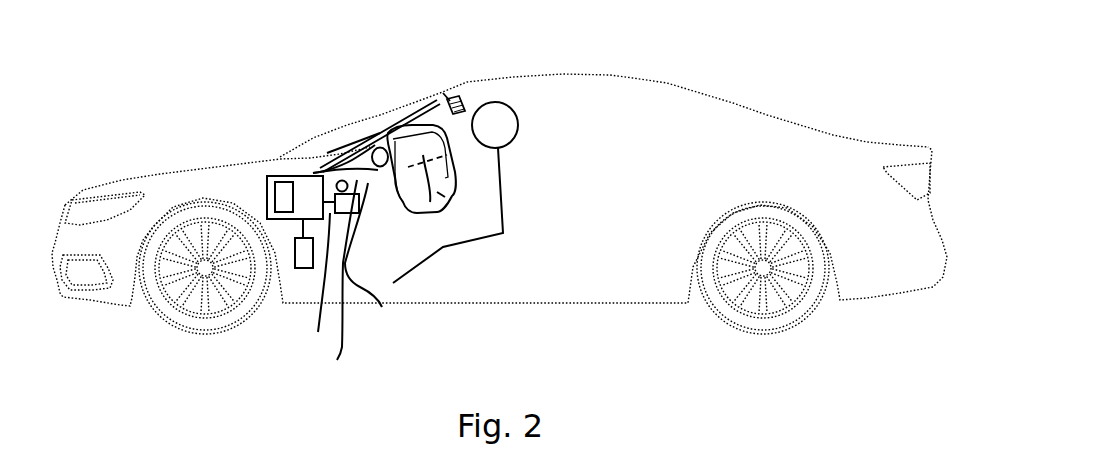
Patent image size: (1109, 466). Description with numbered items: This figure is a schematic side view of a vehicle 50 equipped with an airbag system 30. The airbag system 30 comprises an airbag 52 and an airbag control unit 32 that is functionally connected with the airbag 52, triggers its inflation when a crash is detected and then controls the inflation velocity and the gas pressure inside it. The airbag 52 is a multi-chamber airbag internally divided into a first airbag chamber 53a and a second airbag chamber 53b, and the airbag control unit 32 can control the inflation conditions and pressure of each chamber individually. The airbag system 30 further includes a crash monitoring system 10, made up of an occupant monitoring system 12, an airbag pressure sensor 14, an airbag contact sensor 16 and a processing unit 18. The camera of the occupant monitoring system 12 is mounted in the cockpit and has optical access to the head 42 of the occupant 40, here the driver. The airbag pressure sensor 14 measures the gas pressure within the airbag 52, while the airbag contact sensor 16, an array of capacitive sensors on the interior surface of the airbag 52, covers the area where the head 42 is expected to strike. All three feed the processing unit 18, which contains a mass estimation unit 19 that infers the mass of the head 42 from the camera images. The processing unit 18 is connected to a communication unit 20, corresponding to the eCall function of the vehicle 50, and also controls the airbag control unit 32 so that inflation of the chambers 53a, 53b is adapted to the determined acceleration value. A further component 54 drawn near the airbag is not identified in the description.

The crash monitoring system 10 is at (158, 42).
The occupant monitoring system 12 is at (443, 93).
The airbag pressure sensor 14 is at (312, 282).
The airbag contact sensor 16 is at (457, 170).
The processing unit 18 is at (300, 176).
The mass estimation unit 19 is at (273, 195).
The communication unit 20 is at (293, 270).
The airbag system 30 is at (779, 17).
The airbag control unit 32 is at (348, 279).
The occupant 40 is at (521, 170).
The head 42 is at (520, 127).
The vehicle 50 is at (835, 117).
The airbag 52 is at (427, 105).
The first airbag chamber 53a is at (442, 195).
The second airbag chamber 53b is at (430, 202).
The sensor 54 is at (377, 150).